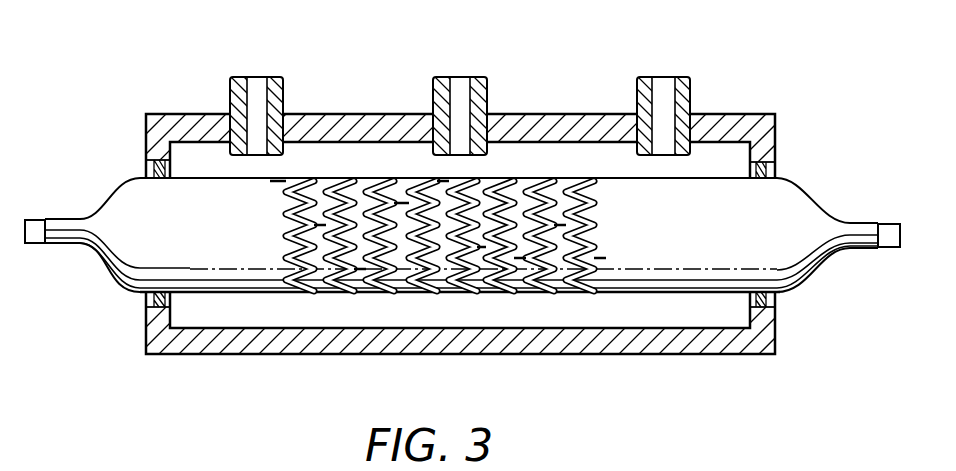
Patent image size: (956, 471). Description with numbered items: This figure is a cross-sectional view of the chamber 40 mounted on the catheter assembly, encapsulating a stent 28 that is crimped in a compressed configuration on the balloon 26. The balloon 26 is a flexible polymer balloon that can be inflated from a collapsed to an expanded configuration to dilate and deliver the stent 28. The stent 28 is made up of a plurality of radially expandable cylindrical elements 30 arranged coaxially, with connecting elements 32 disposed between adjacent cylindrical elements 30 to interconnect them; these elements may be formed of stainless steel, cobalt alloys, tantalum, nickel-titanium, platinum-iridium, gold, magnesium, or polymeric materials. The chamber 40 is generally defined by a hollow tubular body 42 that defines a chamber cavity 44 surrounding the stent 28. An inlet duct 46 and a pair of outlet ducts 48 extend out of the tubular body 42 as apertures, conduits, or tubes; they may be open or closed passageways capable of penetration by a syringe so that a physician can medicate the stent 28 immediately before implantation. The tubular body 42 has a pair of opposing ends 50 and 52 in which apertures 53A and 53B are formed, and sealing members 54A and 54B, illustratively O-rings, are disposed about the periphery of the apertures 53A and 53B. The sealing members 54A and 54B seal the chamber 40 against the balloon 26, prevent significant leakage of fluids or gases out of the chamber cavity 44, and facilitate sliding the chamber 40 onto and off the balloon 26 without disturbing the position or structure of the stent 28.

The balloon 26 is at (818, 192).
The stent 28 is at (358, 222).
The cylindrical elements 30 is at (443, 292).
The connecting elements 32 is at (472, 213).
The chamber 40 is at (547, 71).
The tubular body 42 is at (652, 355).
The chamber cavity 44 is at (215, 307).
The inlet duct 46 is at (461, 77).
The outlet ducts 48 is at (256, 77).
The end 50 is at (107, 295).
The end 52 is at (790, 303).
The aperture 53A is at (147, 171).
The aperture 53B is at (768, 175).
The sealing member 54A is at (143, 301).
The sealing member 54B is at (775, 300).